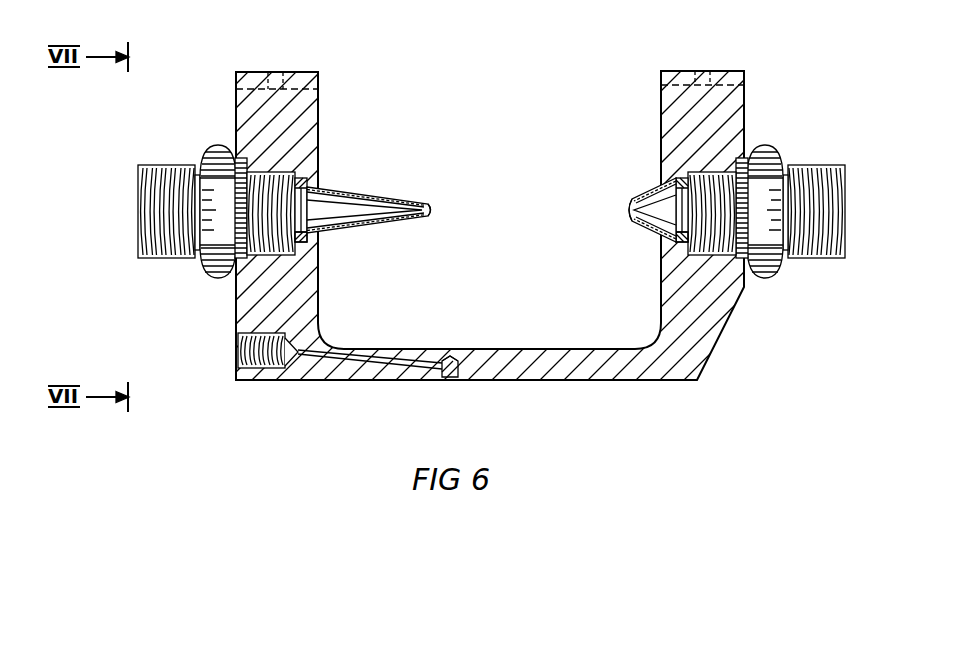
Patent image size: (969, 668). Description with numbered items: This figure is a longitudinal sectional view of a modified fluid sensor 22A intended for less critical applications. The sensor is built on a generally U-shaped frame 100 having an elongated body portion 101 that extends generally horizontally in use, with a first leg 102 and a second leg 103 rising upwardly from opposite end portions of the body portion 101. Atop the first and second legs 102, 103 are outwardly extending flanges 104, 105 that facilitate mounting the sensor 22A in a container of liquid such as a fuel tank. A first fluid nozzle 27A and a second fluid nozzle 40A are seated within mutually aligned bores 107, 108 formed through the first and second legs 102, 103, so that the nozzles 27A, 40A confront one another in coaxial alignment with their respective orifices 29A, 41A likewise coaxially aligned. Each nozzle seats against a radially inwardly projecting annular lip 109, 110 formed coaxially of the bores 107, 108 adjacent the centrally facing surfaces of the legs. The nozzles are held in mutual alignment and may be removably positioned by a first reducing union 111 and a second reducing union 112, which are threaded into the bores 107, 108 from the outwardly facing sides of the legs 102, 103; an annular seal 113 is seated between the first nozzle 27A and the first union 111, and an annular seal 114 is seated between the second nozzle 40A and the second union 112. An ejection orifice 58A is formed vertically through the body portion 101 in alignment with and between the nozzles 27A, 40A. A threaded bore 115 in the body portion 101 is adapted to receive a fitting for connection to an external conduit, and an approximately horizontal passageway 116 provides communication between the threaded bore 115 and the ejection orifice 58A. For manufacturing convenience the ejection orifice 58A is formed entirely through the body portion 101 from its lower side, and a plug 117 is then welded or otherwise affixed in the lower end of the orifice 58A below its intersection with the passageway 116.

The sensor 22A is at (253, 416).
The first fluid nozzle 27A is at (386, 199).
The orifice 29A is at (433, 212).
The second fluid nozzle 40A is at (640, 197).
The orifice 41A is at (633, 209).
The ejection orifice 58A is at (449, 356).
The U-shaped frame 100 is at (650, 384).
The elongated body portion 101 is at (557, 381).
The first leg 102 is at (319, 104).
The second leg 103 is at (746, 102).
The flange 104 is at (236, 80).
The flange 105 is at (745, 80).
The bore 107 is at (302, 178).
The bore 108 is at (690, 175).
The annular lip 109 is at (312, 240).
The annular lip 110 is at (676, 238).
The first reducing union 111 is at (202, 278).
The second reducing union 112 is at (771, 284).
The annular seal 113 is at (301, 250).
The annular seal 114 is at (683, 250).
The threaded bore 115 is at (238, 352).
The passageway 116 is at (388, 372).
The plug 117 is at (449, 380).